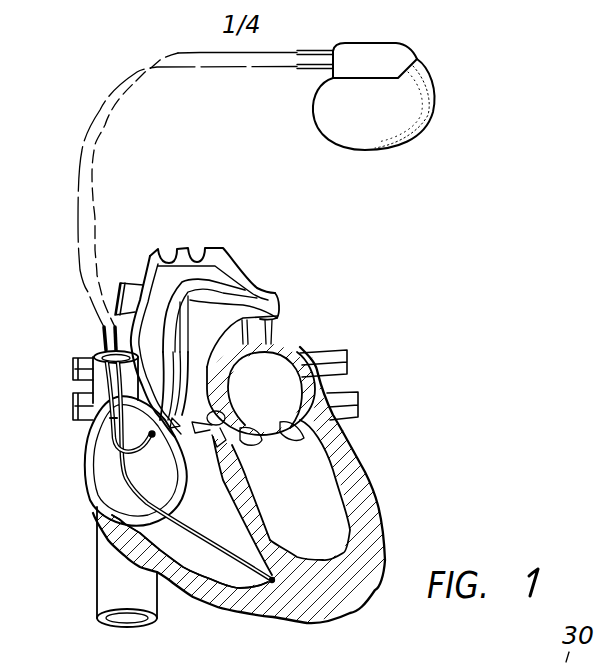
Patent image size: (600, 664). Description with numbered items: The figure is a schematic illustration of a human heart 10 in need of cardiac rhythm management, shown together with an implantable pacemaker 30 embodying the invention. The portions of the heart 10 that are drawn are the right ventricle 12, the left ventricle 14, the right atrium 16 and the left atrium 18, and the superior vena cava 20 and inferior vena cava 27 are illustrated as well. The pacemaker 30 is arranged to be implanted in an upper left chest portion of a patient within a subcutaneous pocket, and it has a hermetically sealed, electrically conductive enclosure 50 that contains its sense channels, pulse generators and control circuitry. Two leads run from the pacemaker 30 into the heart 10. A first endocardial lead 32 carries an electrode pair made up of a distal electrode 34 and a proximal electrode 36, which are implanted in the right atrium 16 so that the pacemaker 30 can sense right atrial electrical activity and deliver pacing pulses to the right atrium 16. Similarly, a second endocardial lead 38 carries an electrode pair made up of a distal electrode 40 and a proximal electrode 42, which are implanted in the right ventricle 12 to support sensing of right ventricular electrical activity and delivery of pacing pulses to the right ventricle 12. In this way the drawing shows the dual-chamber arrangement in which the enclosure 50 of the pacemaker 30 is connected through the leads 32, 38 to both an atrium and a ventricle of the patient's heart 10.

The heart 10 is at (402, 401).
The right ventricle 12 is at (203, 568).
The left ventricle 14 is at (340, 540).
The right atrium 16 is at (108, 455).
The left atrium 18 is at (280, 375).
The superior vena cava 20 is at (100, 388).
The inferior vena cava 27 is at (110, 597).
The implantable pacemaker 30 is at (454, 67).
The first endocardial lead 32 is at (157, 69).
The distal electrode 34 is at (143, 436).
The proximal electrode 36 is at (150, 435).
The second endocardial lead 38 is at (153, 60).
The distal electrode 40 is at (272, 583).
The proximal electrode 42 is at (240, 588).
The enclosure 50 is at (422, 118).